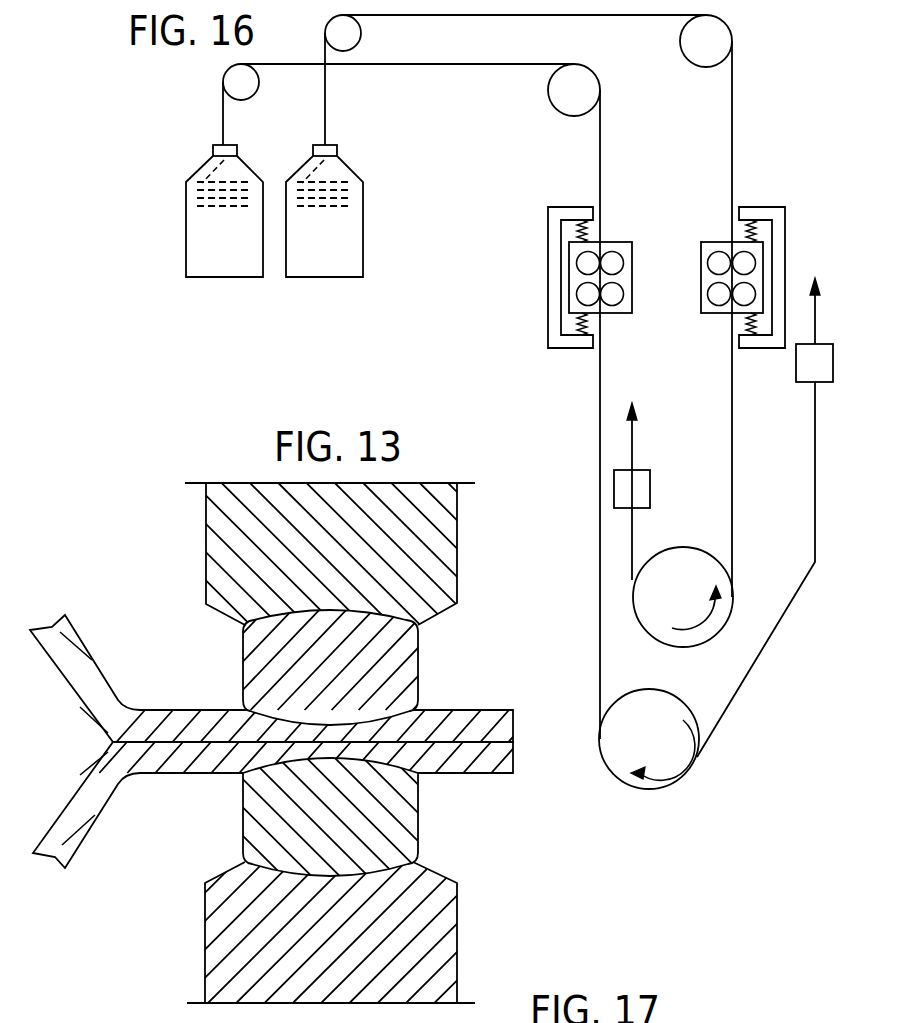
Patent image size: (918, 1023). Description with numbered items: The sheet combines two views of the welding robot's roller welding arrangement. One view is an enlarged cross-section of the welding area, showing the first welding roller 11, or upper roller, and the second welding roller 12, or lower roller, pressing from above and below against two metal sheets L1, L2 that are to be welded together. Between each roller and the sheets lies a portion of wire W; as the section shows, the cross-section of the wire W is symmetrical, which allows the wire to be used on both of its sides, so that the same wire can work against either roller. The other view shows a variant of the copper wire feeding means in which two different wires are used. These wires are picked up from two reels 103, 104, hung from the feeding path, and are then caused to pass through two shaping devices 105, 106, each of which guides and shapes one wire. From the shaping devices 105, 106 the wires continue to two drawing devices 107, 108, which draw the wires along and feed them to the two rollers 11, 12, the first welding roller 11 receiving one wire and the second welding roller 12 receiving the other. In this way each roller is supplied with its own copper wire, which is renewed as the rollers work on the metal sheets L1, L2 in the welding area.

In FIG. 16, the first welding roller 11 is at (640, 602).
In FIG. 13, the first welding roller 11 is at (237, 532).
In FIG. 16, the second welding roller 12 is at (697, 720).
In FIG. 13, the second welding roller 12 is at (220, 947).
In FIG. 16, the wire W is at (771, 634).
In FIG. 13, the wire W is at (398, 832).
In FIG. 13, the metal sheet L1 is at (202, 718).
In FIG. 13, the metal sheet L2 is at (175, 763).
In FIG. 16, the reel 103 is at (210, 258).
In FIG. 16, the reel 104 is at (318, 258).
In FIG. 16, the shaping device 105 is at (552, 275).
In FIG. 16, the shaping device 106 is at (786, 251).
In FIG. 16, the drawing device 107 is at (620, 487).
In FIG. 16, the drawing device 108 is at (827, 368).